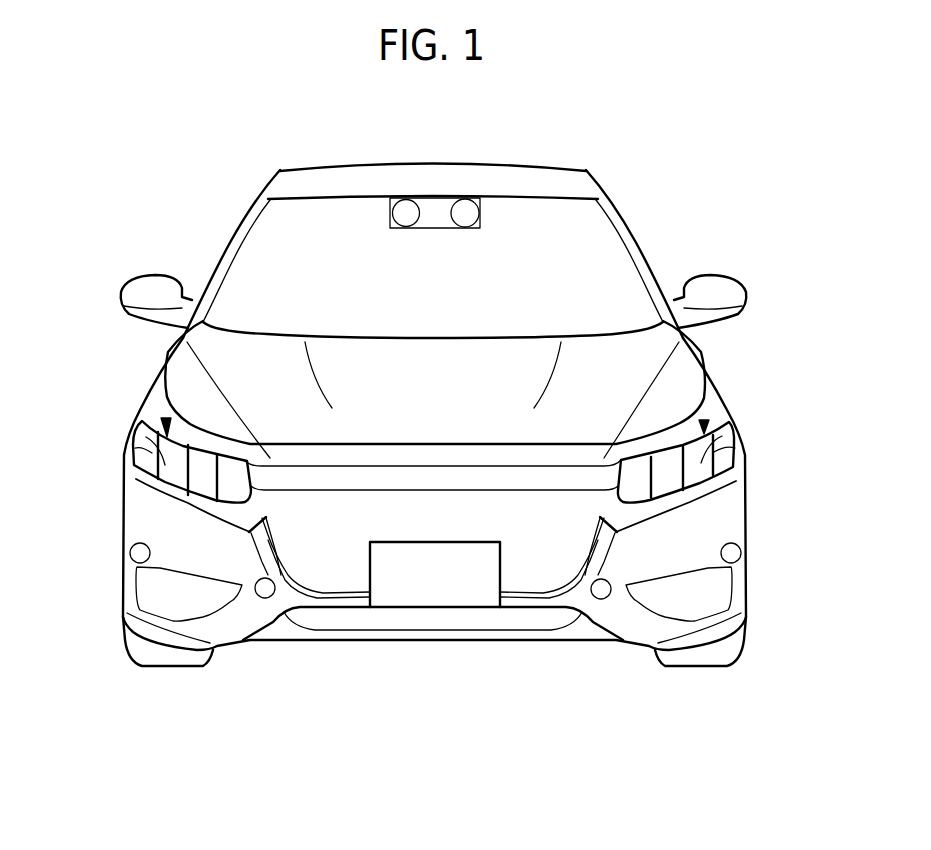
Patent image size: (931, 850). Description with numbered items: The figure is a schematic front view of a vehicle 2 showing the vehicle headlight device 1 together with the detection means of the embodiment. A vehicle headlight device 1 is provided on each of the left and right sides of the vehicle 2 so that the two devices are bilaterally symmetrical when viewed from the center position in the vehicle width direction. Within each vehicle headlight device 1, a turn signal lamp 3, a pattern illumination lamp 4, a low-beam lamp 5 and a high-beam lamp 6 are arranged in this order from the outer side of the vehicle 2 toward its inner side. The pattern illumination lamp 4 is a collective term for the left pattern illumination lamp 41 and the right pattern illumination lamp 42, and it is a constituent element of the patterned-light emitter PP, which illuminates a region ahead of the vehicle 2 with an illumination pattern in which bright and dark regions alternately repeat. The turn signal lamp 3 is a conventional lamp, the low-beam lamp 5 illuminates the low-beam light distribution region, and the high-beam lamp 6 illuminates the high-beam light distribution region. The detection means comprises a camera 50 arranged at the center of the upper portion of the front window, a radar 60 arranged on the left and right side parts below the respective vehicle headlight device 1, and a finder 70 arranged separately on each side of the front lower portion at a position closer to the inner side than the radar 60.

The vehicle headlight device 1 is at (162, 418).
The vehicle 2 is at (550, 166).
The turn signal lamp 3 is at (145, 455).
The pattern illumination lamp 4 is at (170, 449).
The low-beam lamp 5 is at (203, 487).
The high-beam lamp 6 is at (233, 497).
The left pattern illumination lamp 41 is at (697, 477).
The right pattern illumination lamp 42 is at (173, 477).
The camera 50 is at (435, 197).
The radar 60 is at (135, 556).
The finder 70 is at (268, 592).
The patterned-light emitter PP is at (140, 425).